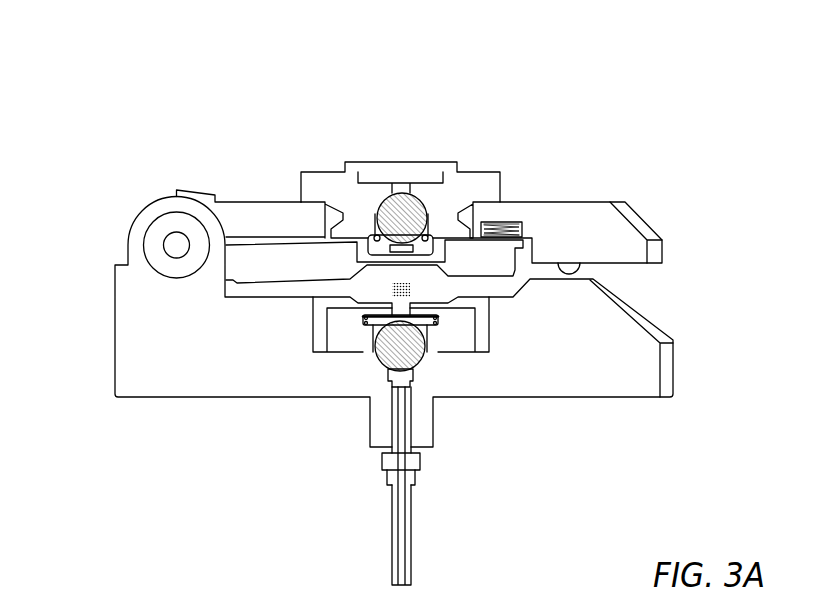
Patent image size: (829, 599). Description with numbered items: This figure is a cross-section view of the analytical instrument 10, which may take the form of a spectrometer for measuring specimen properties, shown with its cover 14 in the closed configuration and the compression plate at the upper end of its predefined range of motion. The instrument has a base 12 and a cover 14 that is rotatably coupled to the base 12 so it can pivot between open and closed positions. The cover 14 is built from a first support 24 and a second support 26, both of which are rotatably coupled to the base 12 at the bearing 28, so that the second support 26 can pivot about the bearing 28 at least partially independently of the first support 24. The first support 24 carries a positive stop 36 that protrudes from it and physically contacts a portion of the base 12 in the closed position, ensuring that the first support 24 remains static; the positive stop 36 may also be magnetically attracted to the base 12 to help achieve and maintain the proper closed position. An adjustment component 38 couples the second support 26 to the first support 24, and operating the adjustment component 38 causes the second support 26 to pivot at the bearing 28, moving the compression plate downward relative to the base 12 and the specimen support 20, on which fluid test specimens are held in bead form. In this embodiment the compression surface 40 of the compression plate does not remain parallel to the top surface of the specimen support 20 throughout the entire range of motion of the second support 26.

The analytical instrument 10 is at (103, 55).
The base 12 is at (141, 337).
The cover 14 is at (640, 136).
The specimen support 20 is at (377, 327).
The first support 24 is at (289, 202).
The second support 26 is at (253, 265).
The bearing 28 is at (163, 232).
The positive stop 36 is at (581, 266).
The adjustment component 38 is at (501, 224).
The compression surface 40 is at (421, 285).